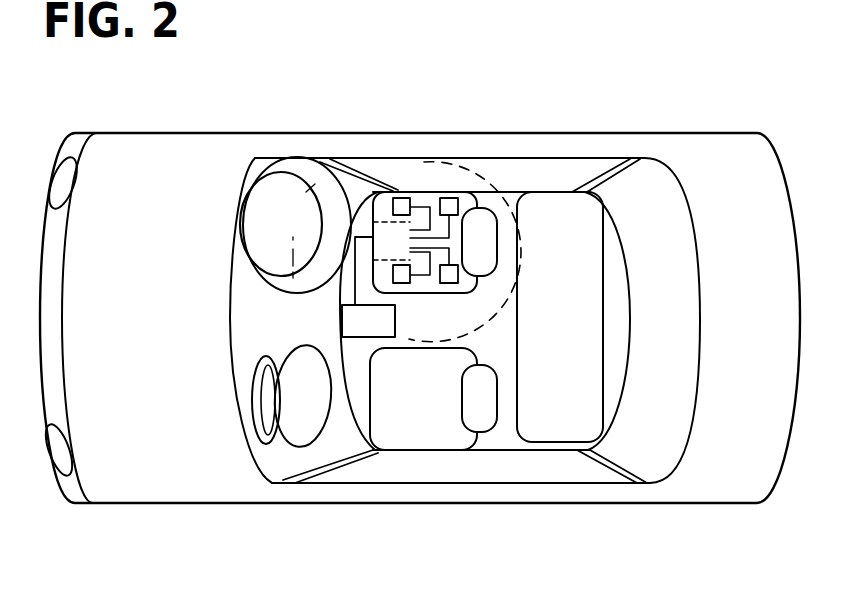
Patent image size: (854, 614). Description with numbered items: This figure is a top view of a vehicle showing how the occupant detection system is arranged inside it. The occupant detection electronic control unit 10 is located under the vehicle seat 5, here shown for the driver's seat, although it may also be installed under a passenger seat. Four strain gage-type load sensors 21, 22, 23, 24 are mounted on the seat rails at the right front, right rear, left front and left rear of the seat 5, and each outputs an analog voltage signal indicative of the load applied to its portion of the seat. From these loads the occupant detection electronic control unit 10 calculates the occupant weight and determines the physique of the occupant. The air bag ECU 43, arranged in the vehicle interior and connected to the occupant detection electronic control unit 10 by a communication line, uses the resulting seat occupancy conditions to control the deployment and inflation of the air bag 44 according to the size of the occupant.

The vehicle seat 5 is at (478, 192).
The occupant detection electronic control unit 10 is at (373, 192).
The strain gage-type load sensor 21 is at (400, 198).
The strain gage-type load sensor 22 is at (449, 198).
The strain gage-type load sensor 23 is at (401, 283).
The strain gage-type load sensor 24 is at (449, 283).
The air bag ECU 43 is at (342, 321).
The air bag 44 is at (275, 187).